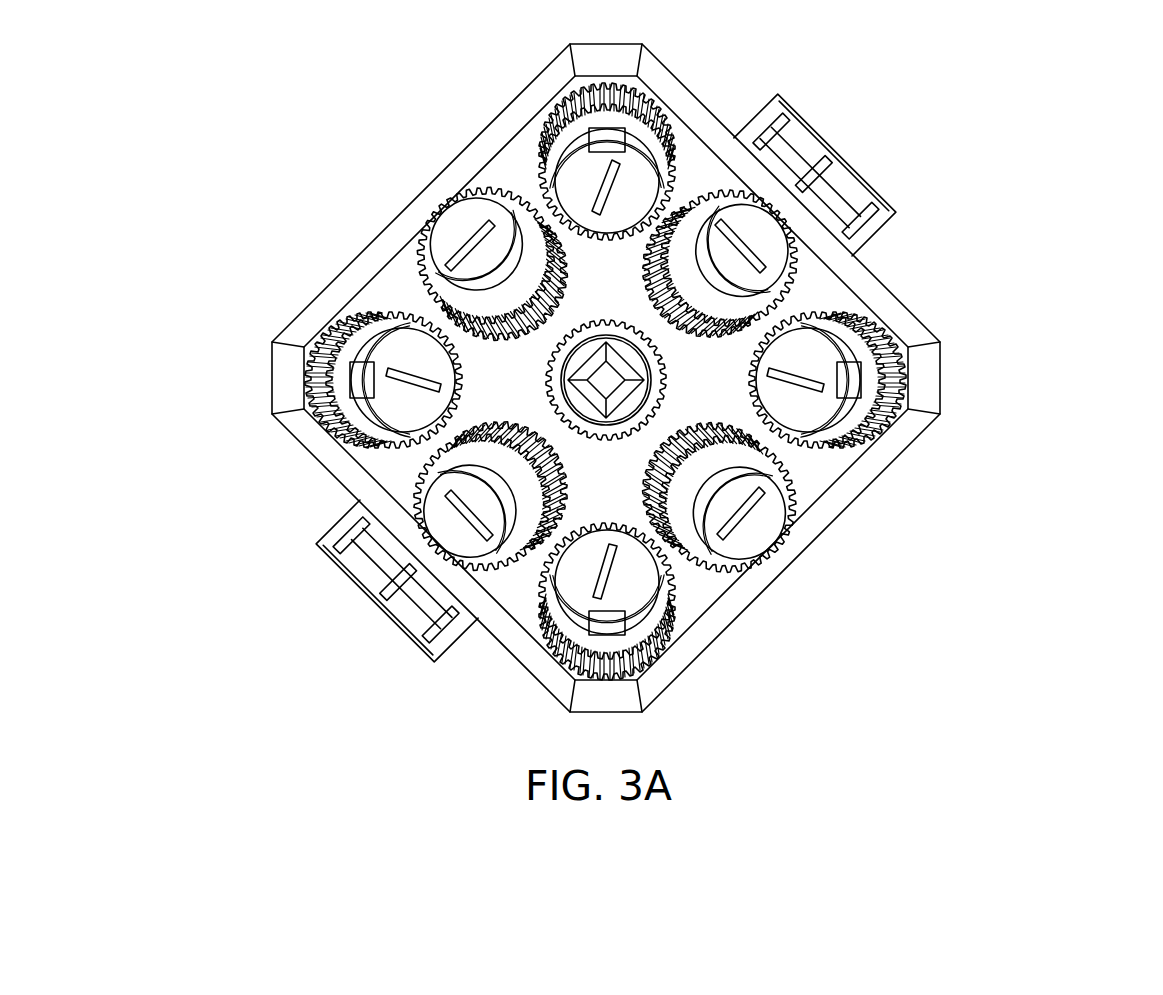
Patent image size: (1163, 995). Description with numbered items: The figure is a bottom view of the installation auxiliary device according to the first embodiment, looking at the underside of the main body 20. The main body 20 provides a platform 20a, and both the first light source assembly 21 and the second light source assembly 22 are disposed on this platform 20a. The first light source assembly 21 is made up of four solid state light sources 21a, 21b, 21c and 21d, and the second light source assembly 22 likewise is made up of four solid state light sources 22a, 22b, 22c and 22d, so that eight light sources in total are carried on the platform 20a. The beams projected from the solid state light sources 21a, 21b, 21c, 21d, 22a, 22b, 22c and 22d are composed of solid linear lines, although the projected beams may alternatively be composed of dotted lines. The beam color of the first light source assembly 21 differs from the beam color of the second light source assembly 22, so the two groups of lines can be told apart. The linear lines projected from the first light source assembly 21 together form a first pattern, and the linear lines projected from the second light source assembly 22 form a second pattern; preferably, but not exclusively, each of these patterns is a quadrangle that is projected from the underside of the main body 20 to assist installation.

The main body 20 is at (785, 613).
The platform 20a is at (828, 472).
The first light source assembly 21 is at (721, 379).
The solid state light source 21a is at (425, 363).
The solid state light source 21b is at (627, 170).
The solid state light source 21c is at (807, 363).
The solid state light source 21d is at (627, 580).
The second light source assembly 22 is at (692, 403).
The solid state light source 22a is at (452, 225).
The solid state light source 22b is at (447, 522).
The solid state light source 22c is at (712, 510).
The solid state light source 22d is at (740, 223).